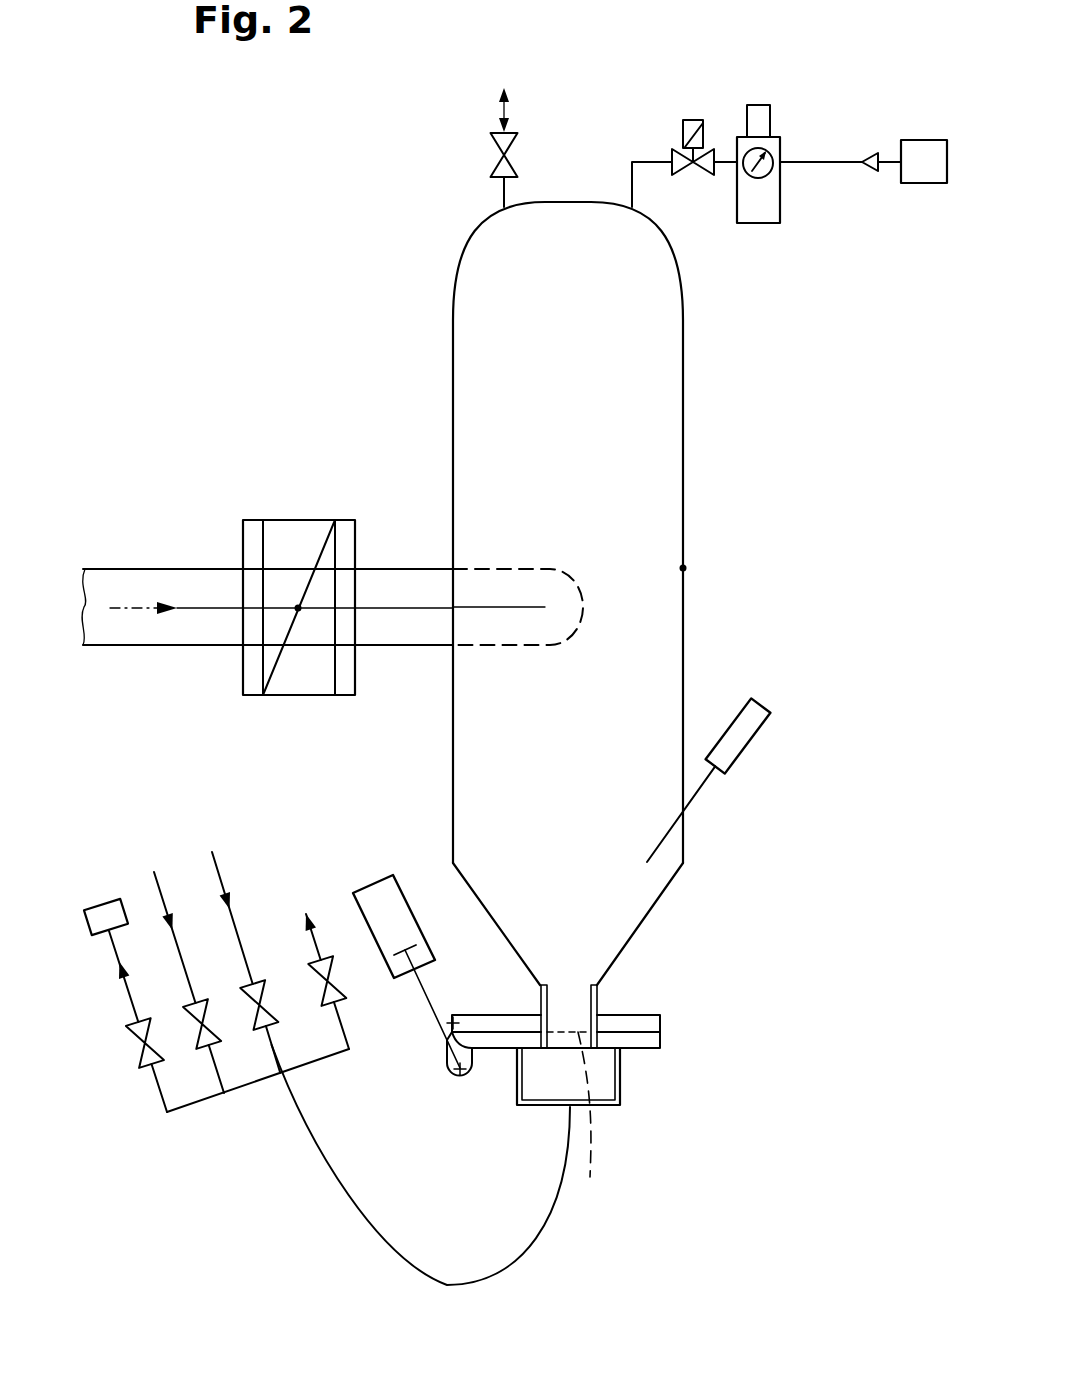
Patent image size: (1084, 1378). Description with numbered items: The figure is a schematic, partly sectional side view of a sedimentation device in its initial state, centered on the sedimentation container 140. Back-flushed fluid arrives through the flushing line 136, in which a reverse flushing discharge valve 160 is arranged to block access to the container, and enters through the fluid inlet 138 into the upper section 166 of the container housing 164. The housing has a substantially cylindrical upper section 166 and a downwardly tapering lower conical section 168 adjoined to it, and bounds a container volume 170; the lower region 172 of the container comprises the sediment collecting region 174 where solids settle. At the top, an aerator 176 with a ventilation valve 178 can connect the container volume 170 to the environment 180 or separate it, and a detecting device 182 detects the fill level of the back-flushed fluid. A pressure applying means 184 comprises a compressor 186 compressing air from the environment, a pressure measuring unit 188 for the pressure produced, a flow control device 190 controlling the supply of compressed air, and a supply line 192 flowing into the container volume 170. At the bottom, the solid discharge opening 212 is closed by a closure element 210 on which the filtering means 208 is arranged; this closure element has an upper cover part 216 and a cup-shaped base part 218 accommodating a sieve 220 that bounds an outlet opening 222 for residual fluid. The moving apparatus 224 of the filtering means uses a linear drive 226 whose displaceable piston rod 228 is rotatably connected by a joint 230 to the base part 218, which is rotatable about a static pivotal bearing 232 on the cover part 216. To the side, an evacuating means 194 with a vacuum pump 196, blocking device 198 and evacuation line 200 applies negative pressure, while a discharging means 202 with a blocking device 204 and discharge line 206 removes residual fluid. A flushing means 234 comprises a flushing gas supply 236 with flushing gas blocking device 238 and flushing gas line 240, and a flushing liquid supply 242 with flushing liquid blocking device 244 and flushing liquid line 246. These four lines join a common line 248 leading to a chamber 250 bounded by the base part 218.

The flushing line 136 is at (130, 569).
The fluid inlet 138 is at (570, 574).
The sedimentation container 140 is at (693, 398).
The reverse flushing discharge valve 160 is at (285, 540).
The container housing 164 is at (688, 568).
The upper section 166 is at (683, 458).
The lower conical section 168 is at (670, 890).
The container volume 170 is at (590, 358).
The lower region 172 is at (480, 778).
The sediment collecting region 174 is at (589, 937).
The aerator 176 is at (458, 108).
The ventilation valve 178 is at (490, 163).
The environment 180 is at (525, 82).
The detecting device 182 is at (763, 740).
The pressure applying means 184 is at (838, 120).
The compressor 186 is at (925, 183).
The pressure measuring unit 188 is at (780, 197).
The flow control device 190 is at (693, 125).
The supply line 192 is at (632, 160).
The evacuating means 194 is at (102, 1163).
The vacuum pump 196 is at (95, 900).
The blocking device 198 is at (137, 1058).
The evacuation line 200 is at (166, 1112).
The discharging means 202 is at (326, 937).
The blocking device 204 is at (337, 975).
The discharge line 206 is at (343, 1050).
The filtering means 208 is at (570, 1030).
The closure element 210 is at (637, 1083).
The solid discharge opening 212 is at (590, 988).
The cover part 216 is at (660, 1020).
The base part 218 is at (612, 1106).
The sieve 220 is at (594, 1121).
The outlet opening 222 is at (553, 1007).
The moving apparatus 224 is at (380, 875).
The linear drive 226 is at (410, 908).
The piston rod 228 is at (437, 1022).
The joint 230 is at (460, 1078).
The pivotal bearing 232 is at (454, 1013).
The flushing means 234 is at (181, 859).
The flushing gas supply 236 is at (231, 848).
The flushing gas blocking device 238 is at (267, 1000).
The flushing gas line 240 is at (275, 1065).
The flushing liquid supply 242 is at (147, 889).
The flushing liquid blocking device 244 is at (212, 1018).
The flushing liquid line 246 is at (217, 1085).
The common line 248 is at (367, 1247).
The chamber 250 is at (575, 1093).